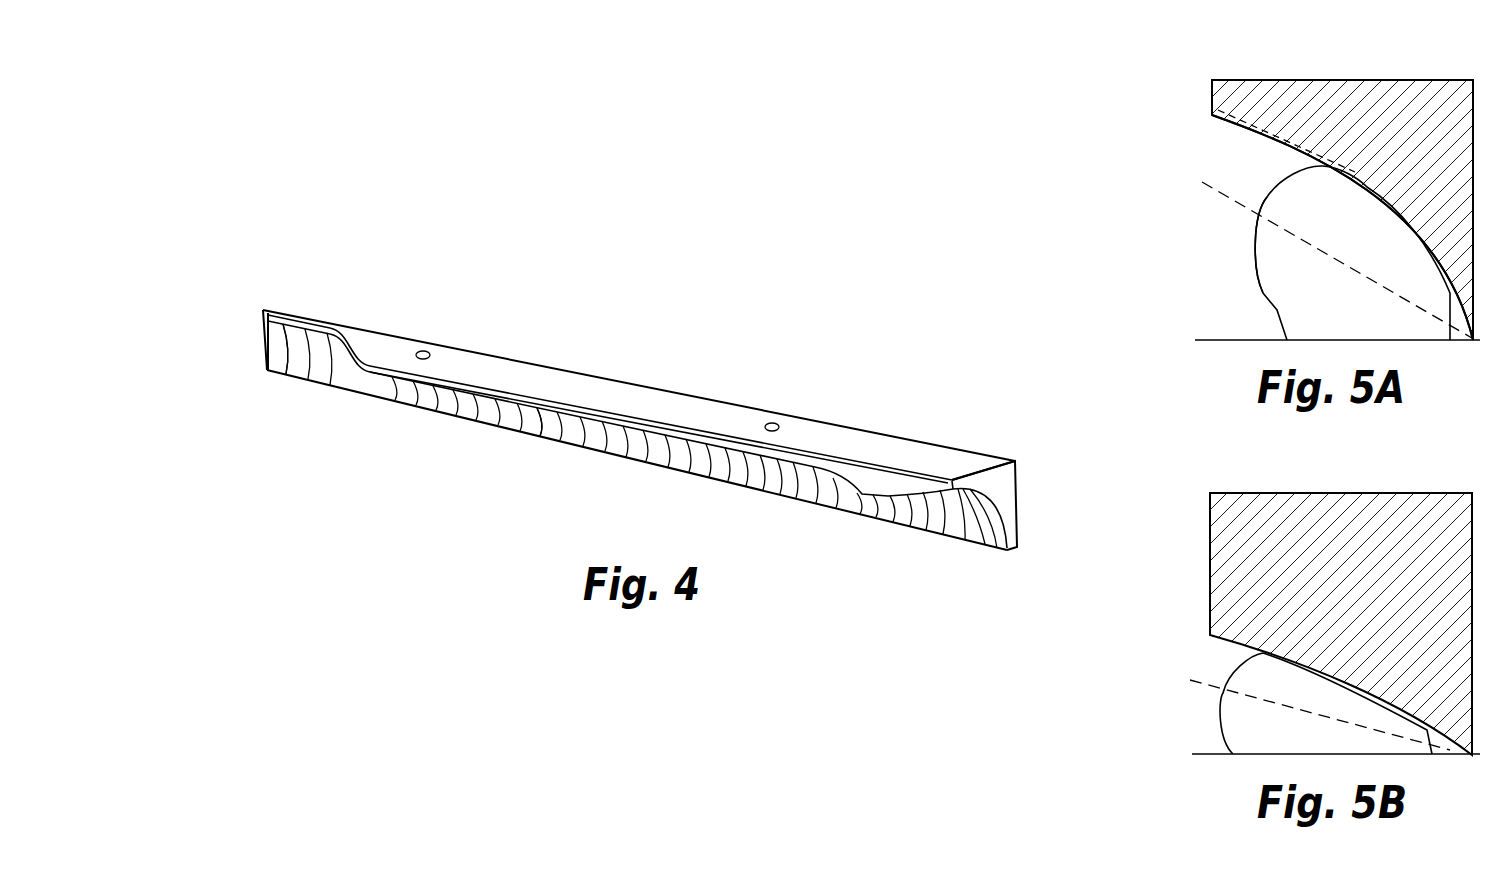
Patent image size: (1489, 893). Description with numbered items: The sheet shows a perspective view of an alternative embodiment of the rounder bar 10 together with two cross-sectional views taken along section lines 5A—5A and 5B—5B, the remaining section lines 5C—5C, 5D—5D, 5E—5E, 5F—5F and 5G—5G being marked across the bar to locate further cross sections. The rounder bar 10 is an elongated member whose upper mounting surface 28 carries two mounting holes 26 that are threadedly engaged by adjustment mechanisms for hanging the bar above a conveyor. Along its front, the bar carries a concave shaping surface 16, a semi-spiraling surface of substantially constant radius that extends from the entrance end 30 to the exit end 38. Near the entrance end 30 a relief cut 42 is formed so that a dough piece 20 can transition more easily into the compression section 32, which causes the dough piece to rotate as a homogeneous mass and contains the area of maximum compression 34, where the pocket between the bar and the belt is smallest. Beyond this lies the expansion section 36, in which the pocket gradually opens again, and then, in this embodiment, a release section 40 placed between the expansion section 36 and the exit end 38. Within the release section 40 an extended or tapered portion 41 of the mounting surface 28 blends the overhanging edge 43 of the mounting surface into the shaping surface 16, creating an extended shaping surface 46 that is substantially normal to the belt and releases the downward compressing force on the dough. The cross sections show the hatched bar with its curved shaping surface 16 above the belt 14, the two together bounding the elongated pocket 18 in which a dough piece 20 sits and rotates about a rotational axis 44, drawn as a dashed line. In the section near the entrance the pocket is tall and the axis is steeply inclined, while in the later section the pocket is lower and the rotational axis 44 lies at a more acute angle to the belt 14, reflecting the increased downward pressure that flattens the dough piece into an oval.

In FIG. 4, the rounder bar 10 is at (493, 250).
In FIG. 5A, the rounder bar 10 is at (1217, 65).
In FIG. 5A, the belt 14 is at (1220, 340).
In FIG. 4, the shaping surface 16 is at (677, 460).
In FIG. 5A, the shaping surface 16 is at (1268, 133).
In FIG. 5A, the pocket 18 is at (1260, 197).
In FIG. 5A, the dough piece 20 is at (1258, 282).
In FIG. 5B, the dough piece 20 is at (1233, 708).
In FIG. 4, the mounting holes 26 is at (428, 350).
In FIG. 4, the mounting surface 28 is at (578, 385).
In FIG. 5A, the mounting surface 28 is at (1377, 79).
In FIG. 4, the entrance end 30 is at (1023, 507).
In FIG. 4, the compression section 32 is at (972, 527).
In FIG. 4, the area of maximum compression 34 is at (848, 488).
In FIG. 4, the expansion section 36 is at (560, 423).
In FIG. 4, the exit end 38 is at (246, 328).
In FIG. 4, the release section 40 is at (307, 347).
In FIG. 4, the tapered portion 41 is at (370, 337).
In FIG. 4, the relief cut 42 is at (1020, 462).
In FIG. 4, the overhanging edge 43 is at (352, 343).
In FIG. 5A, the rotational axis 44 is at (1242, 207).
In FIG. 5B, the rotational axis 44 is at (1213, 685).
In FIG. 4, the extended shaping surface 46 is at (287, 330).
In FIG. 4, the section line 5A— 5A is at (995, 442).
In FIG. 4, the section line 5B— 5B is at (913, 423).
In FIG. 4, the section line 5C— 5C is at (837, 403).
In FIG. 4, the section line 5D— 5D is at (730, 378).
In FIG. 4, the section line 5E— 5E is at (567, 348).
In FIG. 4, the section line 5F— 5F is at (265, 418).
In FIG. 4, the section line 5G— 5G is at (333, 298).